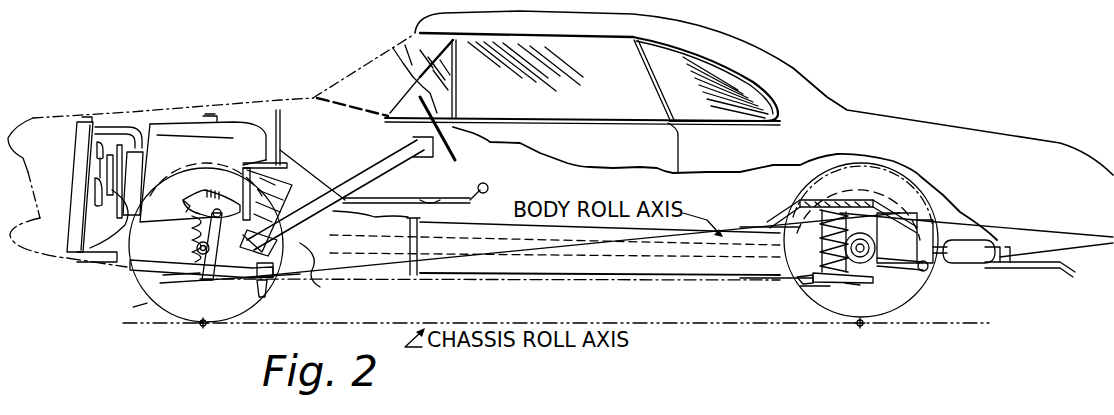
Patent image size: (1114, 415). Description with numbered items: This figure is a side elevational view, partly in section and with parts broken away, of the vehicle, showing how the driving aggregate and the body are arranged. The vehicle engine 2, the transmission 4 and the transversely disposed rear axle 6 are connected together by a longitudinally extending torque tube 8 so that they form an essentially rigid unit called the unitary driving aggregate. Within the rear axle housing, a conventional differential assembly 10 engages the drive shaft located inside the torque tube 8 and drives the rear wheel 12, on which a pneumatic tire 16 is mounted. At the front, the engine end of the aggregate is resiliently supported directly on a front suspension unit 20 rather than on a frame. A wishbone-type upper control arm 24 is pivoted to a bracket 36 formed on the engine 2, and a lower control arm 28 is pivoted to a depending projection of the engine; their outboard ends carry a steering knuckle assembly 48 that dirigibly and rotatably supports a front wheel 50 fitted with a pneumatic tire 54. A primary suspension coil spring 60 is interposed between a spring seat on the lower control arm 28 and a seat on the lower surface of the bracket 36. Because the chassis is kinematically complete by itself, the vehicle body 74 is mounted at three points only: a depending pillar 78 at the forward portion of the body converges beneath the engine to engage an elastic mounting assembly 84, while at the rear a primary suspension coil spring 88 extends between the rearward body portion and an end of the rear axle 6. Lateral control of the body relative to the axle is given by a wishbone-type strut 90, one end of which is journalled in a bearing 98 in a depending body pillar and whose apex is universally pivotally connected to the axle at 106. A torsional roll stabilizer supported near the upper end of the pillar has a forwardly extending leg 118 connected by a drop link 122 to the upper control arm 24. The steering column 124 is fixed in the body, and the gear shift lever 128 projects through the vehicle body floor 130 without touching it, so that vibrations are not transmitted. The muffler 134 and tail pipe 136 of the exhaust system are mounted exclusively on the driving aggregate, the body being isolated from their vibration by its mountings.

The vehicle engine 2 is at (166, 106).
The transmission 4 is at (374, 285).
The rear axle 6 is at (867, 266).
The torque tube 8 is at (636, 280).
The differential assembly 10 is at (847, 294).
The rear wheel 12 is at (802, 312).
The pneumatic tire 16 is at (897, 302).
The front suspension unit 20 is at (197, 293).
The upper control arm 24 is at (186, 207).
The lower control arm 28 is at (147, 264).
The bracket 36 is at (207, 192).
The steering knuckle assembly 48 is at (167, 262).
The front wheel 50 is at (143, 307).
The pneumatic tire 54 is at (230, 313).
The primary suspension coil spring 60 is at (220, 278).
The vehicle body 74 is at (288, 117).
The depending pillar 78 is at (290, 235).
The elastic mounting assembly 84 is at (265, 300).
The primary suspension coil spring 88 is at (817, 203).
The wishbone-type strut 90 is at (900, 278).
The bearing 98 is at (937, 258).
The universal pivot connection 106 is at (803, 284).
The forwardly extending leg 118 is at (281, 150).
The drop link 122 is at (245, 162).
The steering column 124 is at (400, 153).
The gear shift lever 128 is at (486, 183).
The vehicle body floor 130 is at (450, 208).
The muffler 134 is at (1010, 246).
The tail pipe 136 is at (1020, 273).